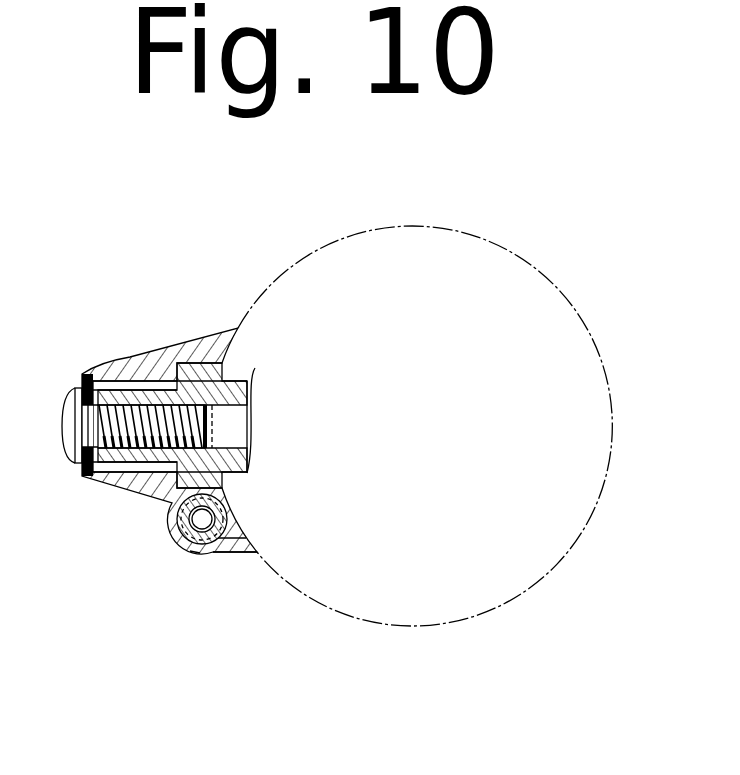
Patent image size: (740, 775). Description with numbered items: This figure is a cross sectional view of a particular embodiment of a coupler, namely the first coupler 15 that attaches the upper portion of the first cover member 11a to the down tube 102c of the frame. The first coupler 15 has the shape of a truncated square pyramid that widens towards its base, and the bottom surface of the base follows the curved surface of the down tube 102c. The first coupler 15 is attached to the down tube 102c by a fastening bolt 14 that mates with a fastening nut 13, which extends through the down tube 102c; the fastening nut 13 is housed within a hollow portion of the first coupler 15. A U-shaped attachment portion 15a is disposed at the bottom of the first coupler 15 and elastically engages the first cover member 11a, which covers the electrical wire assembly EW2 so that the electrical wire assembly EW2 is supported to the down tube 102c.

The down tube 102c is at (552, 283).
The first coupler 15 is at (132, 356).
The U-shaped attachment portion 15a is at (239, 552).
The fastening nut 13 is at (203, 337).
The fastening bolt 14 is at (65, 415).
The first cover member 11a is at (180, 530).
The electrical wire assembly EW2 is at (195, 552).